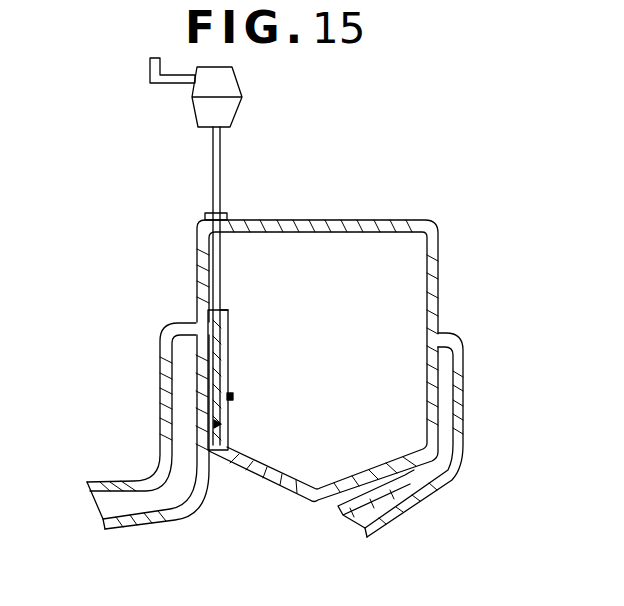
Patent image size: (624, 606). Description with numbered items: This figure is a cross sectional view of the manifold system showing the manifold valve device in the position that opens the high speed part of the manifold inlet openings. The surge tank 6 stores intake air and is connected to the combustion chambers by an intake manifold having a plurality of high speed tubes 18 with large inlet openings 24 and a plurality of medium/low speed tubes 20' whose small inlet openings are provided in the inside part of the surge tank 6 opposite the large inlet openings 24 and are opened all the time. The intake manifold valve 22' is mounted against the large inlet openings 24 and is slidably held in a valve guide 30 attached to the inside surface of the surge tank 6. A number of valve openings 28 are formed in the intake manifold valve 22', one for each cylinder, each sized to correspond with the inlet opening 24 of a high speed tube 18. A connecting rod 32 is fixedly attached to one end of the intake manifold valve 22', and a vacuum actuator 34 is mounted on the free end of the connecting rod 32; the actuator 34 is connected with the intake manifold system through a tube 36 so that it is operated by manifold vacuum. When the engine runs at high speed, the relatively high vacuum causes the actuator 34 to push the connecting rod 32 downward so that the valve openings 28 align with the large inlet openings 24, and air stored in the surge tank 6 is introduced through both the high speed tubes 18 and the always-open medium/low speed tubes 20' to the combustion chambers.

The surge tank 6 is at (437, 232).
The high speed tube 18 is at (158, 367).
The medium/low speed tube 20' is at (448, 435).
The intake manifold valve 22' is at (280, 381).
The inlet opening 24 is at (203, 382).
The valve opening 28 is at (228, 355).
The valve guide 30 is at (227, 424).
The connecting rod 32 is at (222, 170).
The vacuum actuator 34 is at (227, 110).
The tube 36 is at (165, 85).